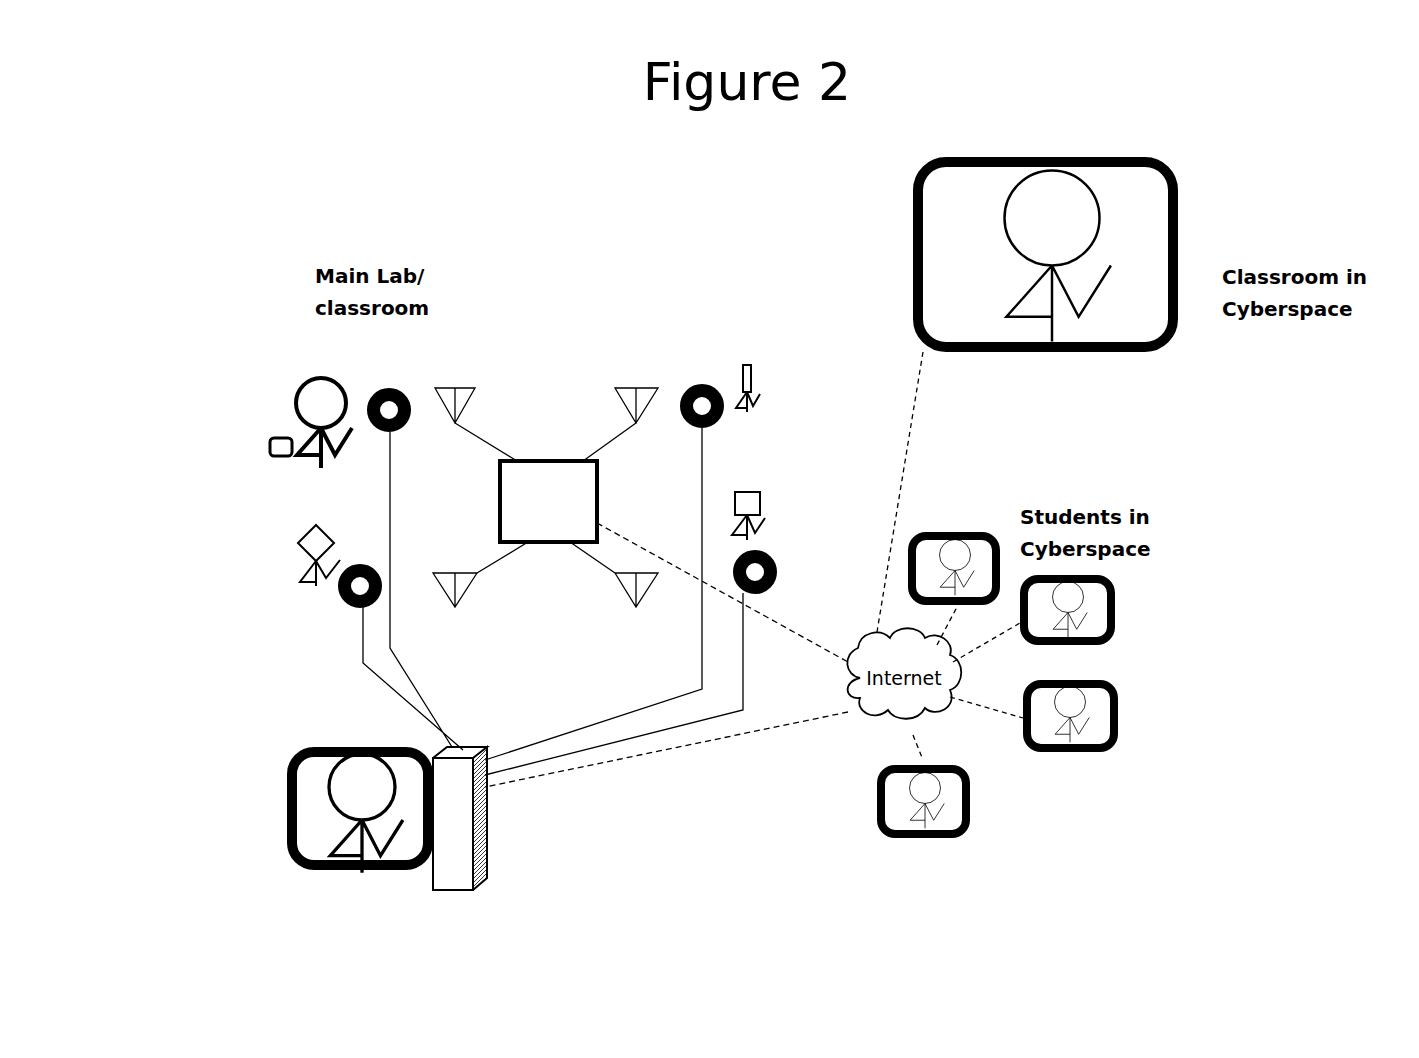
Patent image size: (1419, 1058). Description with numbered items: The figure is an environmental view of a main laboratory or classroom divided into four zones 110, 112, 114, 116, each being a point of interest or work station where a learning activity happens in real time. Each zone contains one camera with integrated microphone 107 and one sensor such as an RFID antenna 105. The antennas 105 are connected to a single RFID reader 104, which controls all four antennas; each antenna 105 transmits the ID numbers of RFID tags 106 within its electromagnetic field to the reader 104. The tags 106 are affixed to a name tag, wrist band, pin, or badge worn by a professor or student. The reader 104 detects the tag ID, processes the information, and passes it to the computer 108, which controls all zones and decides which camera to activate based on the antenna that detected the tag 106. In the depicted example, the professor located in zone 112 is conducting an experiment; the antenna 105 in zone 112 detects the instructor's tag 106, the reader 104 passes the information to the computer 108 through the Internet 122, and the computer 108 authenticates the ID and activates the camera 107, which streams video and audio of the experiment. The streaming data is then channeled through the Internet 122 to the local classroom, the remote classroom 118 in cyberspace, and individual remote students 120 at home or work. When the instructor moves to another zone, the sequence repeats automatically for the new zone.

The RFID reader 104 is at (562, 450).
The antenna 105 is at (478, 388).
The RFID tag 106 is at (256, 446).
The camera 107 is at (382, 440).
The computer 108 is at (497, 822).
The zone 110 is at (658, 347).
The zone 112 is at (400, 350).
The zone 114 is at (407, 642).
The zone 116 is at (667, 650).
The remote classroom 118 is at (1178, 202).
The remote students 120 is at (1125, 662).
The Internet 122 is at (948, 710).